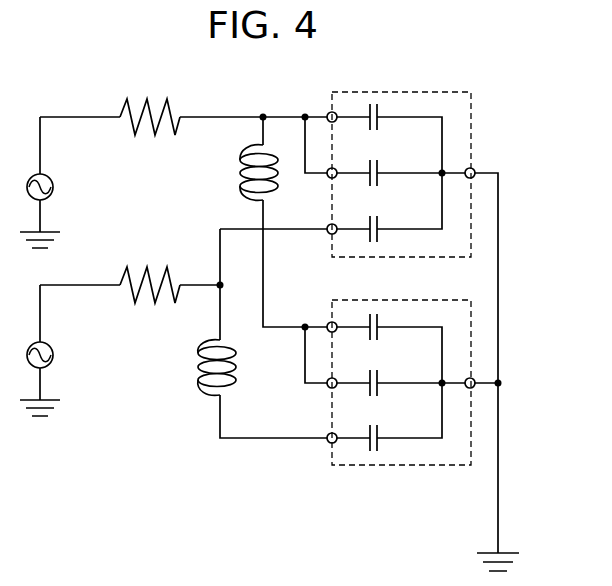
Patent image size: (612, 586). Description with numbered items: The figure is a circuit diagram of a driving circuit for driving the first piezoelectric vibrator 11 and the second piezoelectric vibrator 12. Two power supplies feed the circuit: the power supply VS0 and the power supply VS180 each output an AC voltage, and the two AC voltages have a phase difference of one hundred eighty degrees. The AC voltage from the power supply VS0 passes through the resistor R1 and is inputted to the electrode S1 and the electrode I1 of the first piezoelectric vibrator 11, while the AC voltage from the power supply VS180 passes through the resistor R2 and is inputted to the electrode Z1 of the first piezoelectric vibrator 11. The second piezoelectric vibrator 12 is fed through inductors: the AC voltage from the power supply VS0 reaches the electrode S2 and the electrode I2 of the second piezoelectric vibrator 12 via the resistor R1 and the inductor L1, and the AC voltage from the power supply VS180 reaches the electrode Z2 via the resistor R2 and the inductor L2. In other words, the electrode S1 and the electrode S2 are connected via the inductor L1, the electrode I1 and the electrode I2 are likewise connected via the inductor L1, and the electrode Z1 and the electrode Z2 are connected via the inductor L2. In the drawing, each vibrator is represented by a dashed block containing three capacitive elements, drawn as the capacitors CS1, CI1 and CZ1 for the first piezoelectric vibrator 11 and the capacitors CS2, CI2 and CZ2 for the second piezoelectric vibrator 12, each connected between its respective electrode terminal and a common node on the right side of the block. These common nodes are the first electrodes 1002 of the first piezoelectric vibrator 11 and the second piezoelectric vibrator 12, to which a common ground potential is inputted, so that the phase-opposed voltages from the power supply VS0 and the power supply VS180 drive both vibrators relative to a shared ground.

The power supply VS0 is at (54, 183).
The power supply VS180 is at (54, 351).
The resistor R1 is at (152, 134).
The resistor R2 is at (152, 302).
The inductor L1 is at (239, 175).
The inductor L2 is at (197, 384).
The electrode S1 is at (328, 113).
The electrode S2 is at (328, 323).
The electrode I1 is at (334, 168).
The electrode I2 is at (334, 378).
The electrode Z1 is at (328, 225).
The electrode Z2 is at (328, 434).
The first piezoelectric vibrator 11 is at (402, 92).
The second piezoelectric vibrator 12 is at (402, 300).
The first source capacitor CS1 is at (378, 124).
The first intermediate capacitor CI1 is at (378, 180).
The first impedance capacitor CZ1 is at (378, 236).
The second source capacitor CS2 is at (378, 334).
The second intermediate capacitor CI2 is at (378, 390).
The second impedance capacitor CZ2 is at (378, 445).
The first electrodes 1002 is at (474, 168).